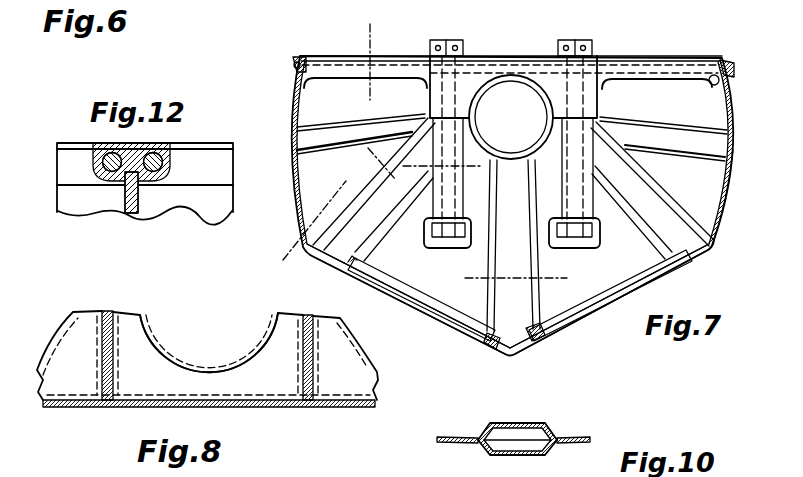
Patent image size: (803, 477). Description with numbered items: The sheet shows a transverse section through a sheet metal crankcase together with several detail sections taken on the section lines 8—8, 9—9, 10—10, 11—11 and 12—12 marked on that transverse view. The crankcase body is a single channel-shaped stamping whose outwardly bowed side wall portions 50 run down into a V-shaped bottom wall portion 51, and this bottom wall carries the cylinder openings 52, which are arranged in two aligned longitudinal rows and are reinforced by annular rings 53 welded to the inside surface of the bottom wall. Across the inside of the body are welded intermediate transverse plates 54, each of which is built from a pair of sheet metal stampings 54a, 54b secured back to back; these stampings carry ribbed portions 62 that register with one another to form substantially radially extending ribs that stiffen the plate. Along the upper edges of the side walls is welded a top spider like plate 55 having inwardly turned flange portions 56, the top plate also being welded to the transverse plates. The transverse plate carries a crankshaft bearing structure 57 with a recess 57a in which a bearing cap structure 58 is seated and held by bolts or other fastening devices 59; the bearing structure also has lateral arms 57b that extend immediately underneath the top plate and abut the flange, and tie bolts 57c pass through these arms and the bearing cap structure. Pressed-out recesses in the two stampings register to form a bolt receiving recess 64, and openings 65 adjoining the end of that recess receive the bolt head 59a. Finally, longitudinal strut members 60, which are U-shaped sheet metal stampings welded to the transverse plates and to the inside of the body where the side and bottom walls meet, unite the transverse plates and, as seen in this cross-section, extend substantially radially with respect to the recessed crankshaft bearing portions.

In FIG. 7, the side wall portions 50 is at (290, 95).
In FIG. 12, the side wall portions 50 is at (72, 201).
In FIG. 8, the side wall portions 50 is at (258, 406).
In FIG. 7, the bottom wall portion 51 is at (697, 262).
In FIG. 7, the cylinder openings 52 is at (418, 312).
In FIG. 7, the annular rings 53 is at (387, 280).
In FIG. 7, the intermediate transverse plates 54 is at (715, 184).
In FIG. 8, the intermediate transverse plates 54 is at (100, 338).
In FIG. 12, the sheet metal stamping 54a is at (126, 213).
In FIG. 10, the sheet metal stamping 54a is at (460, 436).
In FIG. 12, the sheet metal stamping 54b is at (137, 214).
In FIG. 10, the sheet metal stamping 54b is at (567, 446).
In FIG. 7, the top spider like plate 55 is at (332, 54).
In FIG. 12, the top spider like plate 55 is at (75, 141).
In FIG. 7, the inwardly turned flange portions 56 is at (293, 65).
In FIG. 12, the inwardly turned flange portions 56 is at (65, 176).
In FIG. 7, the crankshaft bearing structure 57 is at (507, 167).
In FIG. 7, the recess 57a is at (597, 96).
In FIG. 7, the lateral arms 57b is at (323, 81).
In FIG. 7, the tie bolts 57c is at (305, 61).
In FIG. 12, the tie bolts 57c is at (130, 143).
In FIG. 7, the bearing cap structure 58 is at (475, 80).
In FIG. 7, the bolts or fastening devices 59 is at (447, 40).
In FIG. 7, the bolt head 59a is at (424, 229).
In FIG. 7, the longitudinal strut members 60 is at (330, 213).
In FIG. 8, the longitudinal strut members 60 is at (167, 366).
In FIG. 7, the ribbed portions 62 is at (523, 302).
In FIG. 10, the ribbed portions 62 is at (526, 424).
In FIG. 7, the bolt receiving recess 64 is at (470, 201).
In FIG. 7, the openings 65 is at (450, 248).
In FIG. 7, the section line 8— 8 is at (357, 189).
In FIG. 7, the section line 9— 9 is at (360, 167).
In FIG. 7, the section line 10— 10 is at (474, 289).
In FIG. 7, the section line 11— 11 is at (417, 175).
In FIG. 7, the section line 12— 12 is at (360, 40).